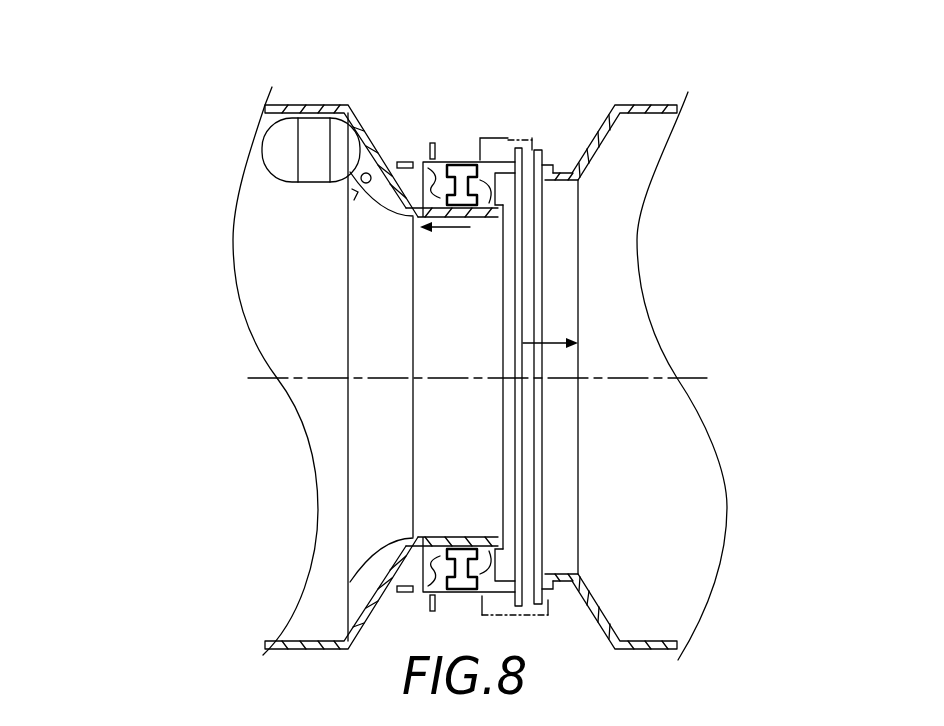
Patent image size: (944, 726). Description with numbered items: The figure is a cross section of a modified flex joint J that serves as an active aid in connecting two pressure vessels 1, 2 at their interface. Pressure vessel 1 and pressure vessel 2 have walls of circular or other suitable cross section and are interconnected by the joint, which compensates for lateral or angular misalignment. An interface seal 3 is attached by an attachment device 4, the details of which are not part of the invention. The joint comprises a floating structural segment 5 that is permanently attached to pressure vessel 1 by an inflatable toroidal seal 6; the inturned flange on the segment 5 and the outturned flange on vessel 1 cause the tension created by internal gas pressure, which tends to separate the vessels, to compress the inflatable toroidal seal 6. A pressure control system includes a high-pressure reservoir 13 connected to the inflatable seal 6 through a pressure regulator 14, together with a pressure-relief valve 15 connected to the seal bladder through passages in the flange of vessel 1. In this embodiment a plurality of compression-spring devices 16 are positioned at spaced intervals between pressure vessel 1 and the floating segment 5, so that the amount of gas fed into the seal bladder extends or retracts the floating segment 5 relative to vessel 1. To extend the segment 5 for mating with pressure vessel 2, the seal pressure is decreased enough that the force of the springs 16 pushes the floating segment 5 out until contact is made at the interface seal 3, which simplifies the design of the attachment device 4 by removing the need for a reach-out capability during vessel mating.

The pressure vessel 1 is at (318, 105).
The pressure vessel 2 is at (622, 104).
The interface seal 3 is at (528, 148).
The attachment device 4 is at (502, 138).
The floating structural segment 5 is at (490, 160).
The inflatable toroidal seal 6 is at (463, 162).
The high-pressure reservoir 13 is at (280, 105).
The pressure regulator 14 is at (368, 184).
The pressure-relief valve 15 is at (428, 143).
The compression-spring device 16 is at (397, 162).